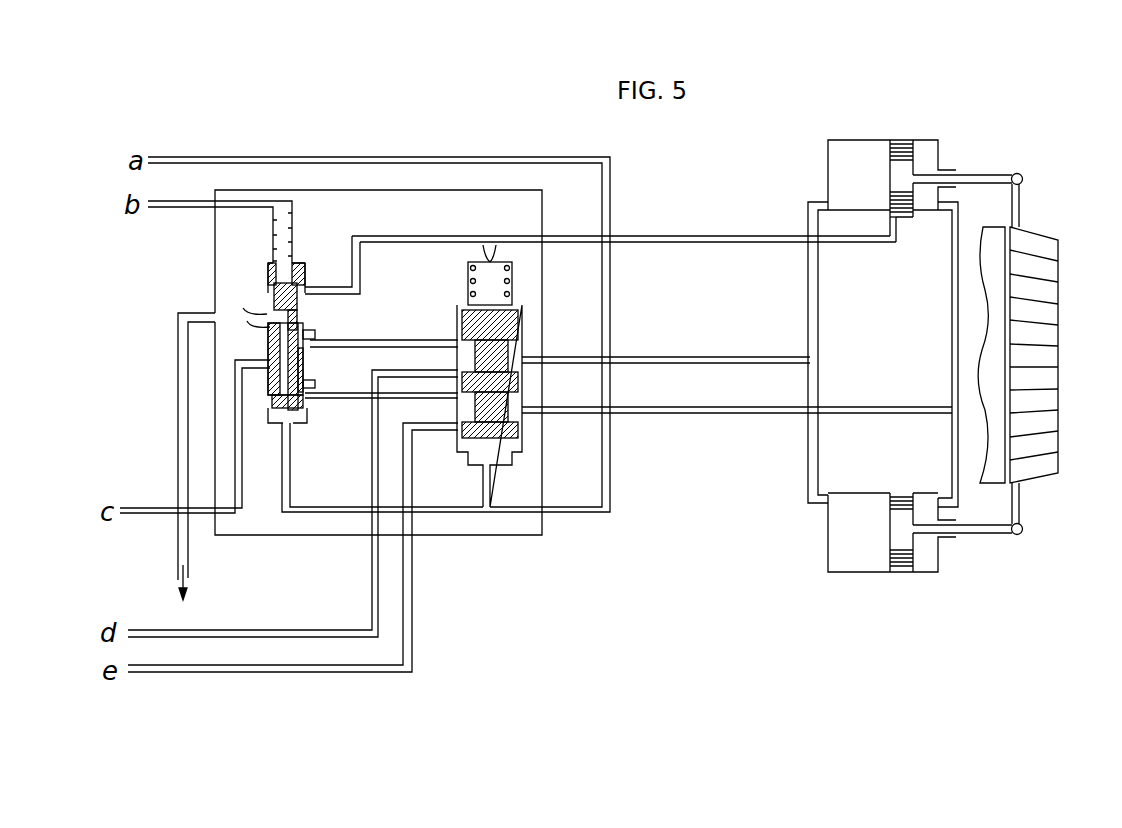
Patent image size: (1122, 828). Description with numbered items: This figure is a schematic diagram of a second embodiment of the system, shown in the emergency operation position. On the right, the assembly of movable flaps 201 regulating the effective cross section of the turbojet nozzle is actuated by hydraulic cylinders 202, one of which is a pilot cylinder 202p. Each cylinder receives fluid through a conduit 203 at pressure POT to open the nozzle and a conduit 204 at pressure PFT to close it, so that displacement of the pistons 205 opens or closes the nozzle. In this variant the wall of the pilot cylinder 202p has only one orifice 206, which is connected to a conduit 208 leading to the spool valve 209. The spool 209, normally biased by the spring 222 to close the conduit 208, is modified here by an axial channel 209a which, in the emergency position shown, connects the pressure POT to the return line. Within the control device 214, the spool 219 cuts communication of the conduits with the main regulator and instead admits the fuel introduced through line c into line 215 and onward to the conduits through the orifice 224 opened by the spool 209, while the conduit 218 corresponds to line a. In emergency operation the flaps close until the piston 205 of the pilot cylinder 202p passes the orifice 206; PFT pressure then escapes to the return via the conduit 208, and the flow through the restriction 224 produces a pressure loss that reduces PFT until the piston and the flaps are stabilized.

The assembly of movable flaps 201 is at (1045, 465).
The hydraulic cylinder 202 is at (867, 572).
The pilot cylinder 202p is at (866, 140).
The conduit for admission of hydraulic fluid to open the nozzle 203 is at (955, 367).
The conduit to admit hydraulic fluid to close the nozzle 204 is at (810, 278).
The piston 205 is at (903, 140).
The orifice 206 is at (897, 223).
The conduit 208 is at (704, 236).
The spool valve 209 is at (321, 362).
The axial channel 209a is at (308, 331).
The control device 214 is at (415, 202).
The line 215 is at (230, 462).
The conduit 218 is at (608, 296).
The spool 219 is at (510, 322).
The spring 222 is at (297, 226).
The orifice 224 is at (318, 340).